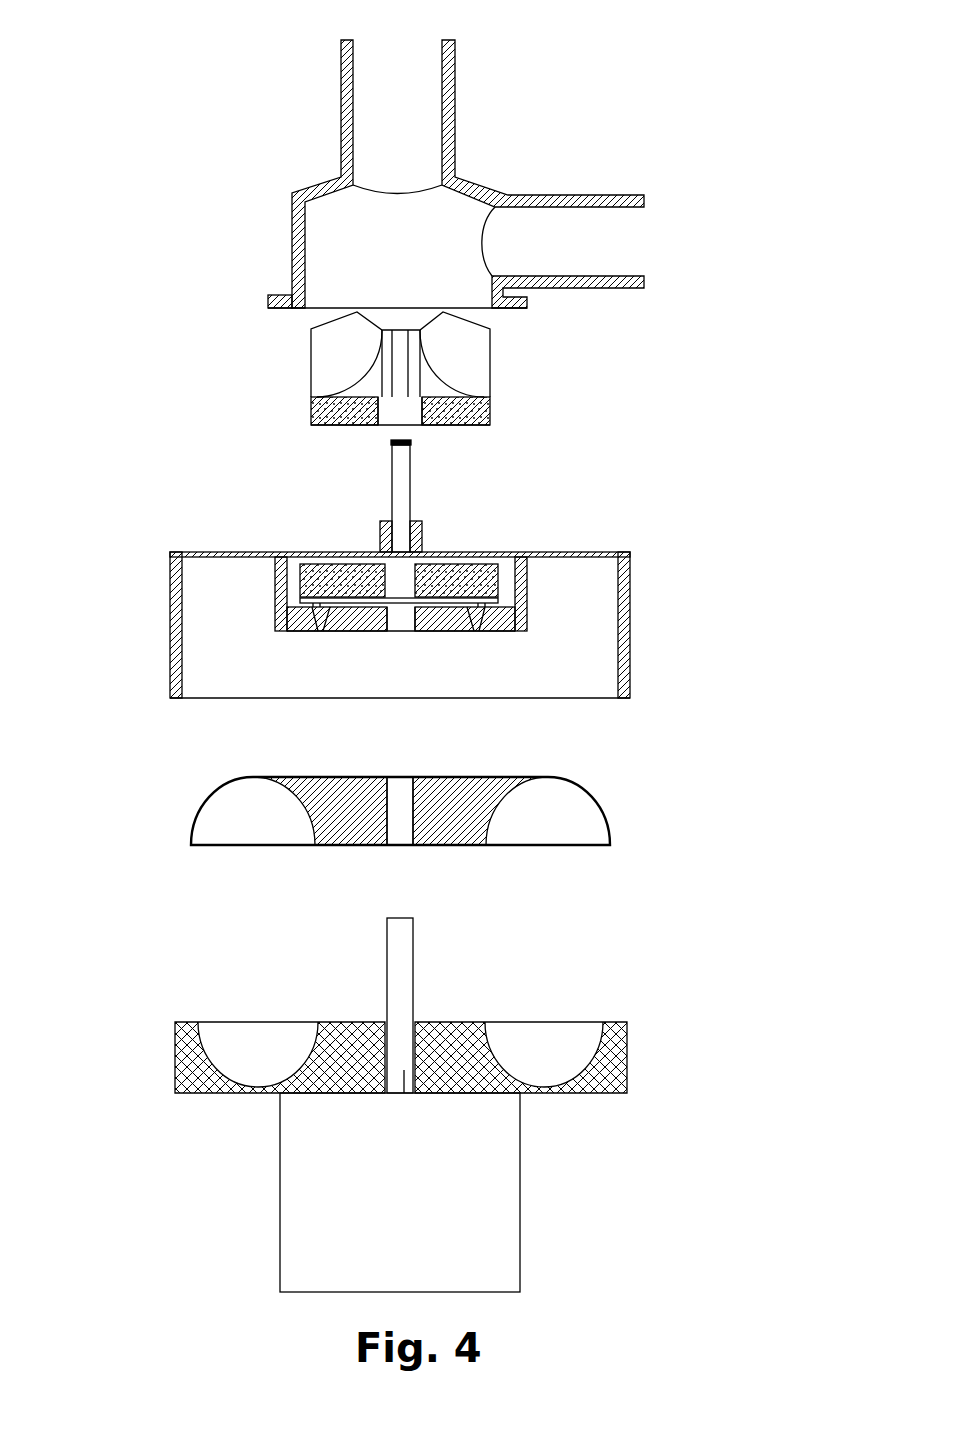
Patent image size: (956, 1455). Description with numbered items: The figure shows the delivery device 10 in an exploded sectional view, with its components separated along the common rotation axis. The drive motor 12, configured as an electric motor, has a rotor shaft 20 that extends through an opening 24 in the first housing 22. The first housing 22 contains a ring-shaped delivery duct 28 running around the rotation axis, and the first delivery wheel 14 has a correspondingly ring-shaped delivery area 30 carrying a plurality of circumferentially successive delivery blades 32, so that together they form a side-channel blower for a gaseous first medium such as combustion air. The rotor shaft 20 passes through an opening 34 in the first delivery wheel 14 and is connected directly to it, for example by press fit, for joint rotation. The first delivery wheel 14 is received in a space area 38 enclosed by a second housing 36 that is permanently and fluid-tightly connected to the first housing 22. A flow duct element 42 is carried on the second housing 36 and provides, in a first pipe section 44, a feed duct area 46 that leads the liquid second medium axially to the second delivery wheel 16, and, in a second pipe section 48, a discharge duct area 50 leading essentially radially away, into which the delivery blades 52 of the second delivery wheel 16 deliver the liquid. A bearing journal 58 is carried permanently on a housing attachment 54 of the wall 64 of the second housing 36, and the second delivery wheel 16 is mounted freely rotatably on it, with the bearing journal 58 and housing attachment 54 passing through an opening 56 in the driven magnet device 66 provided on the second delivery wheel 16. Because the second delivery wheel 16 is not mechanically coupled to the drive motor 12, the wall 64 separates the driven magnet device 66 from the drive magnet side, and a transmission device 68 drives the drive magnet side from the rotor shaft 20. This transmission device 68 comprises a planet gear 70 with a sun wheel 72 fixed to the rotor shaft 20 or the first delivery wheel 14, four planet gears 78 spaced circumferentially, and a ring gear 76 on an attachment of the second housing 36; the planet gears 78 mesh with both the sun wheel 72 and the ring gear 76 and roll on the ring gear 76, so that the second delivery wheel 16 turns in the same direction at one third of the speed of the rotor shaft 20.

The delivery device 10 is at (709, 98).
The drive motor 12 is at (527, 1176).
The first delivery wheel 14 is at (463, 846).
The second delivery wheel 16 is at (399, 408).
The rotor shaft 20 is at (413, 1003).
The first housing 22 is at (175, 1065).
The opening 24 is at (404, 1094).
The delivery duct 28 is at (585, 1050).
The delivery area 30 is at (413, 996).
The delivery blades 32 is at (572, 823).
The opening 34 is at (392, 818).
The second housing 36 is at (170, 622).
The space area 38 is at (588, 620).
The flow duct element 42 is at (501, 174).
The first pipe section 44 is at (458, 87).
The feed duct area 46 is at (378, 85).
The second pipe section 48 is at (630, 194).
The discharge duct area 50 is at (636, 247).
The delivery blades 52 is at (330, 352).
The housing attachment 54 is at (424, 537).
The opening 56 is at (405, 412).
The bearing journal 58 is at (388, 490).
The wall 64 is at (222, 551).
The driven magnet device 66 is at (492, 413).
The transmission device 68 is at (408, 569).
The planet gear 70 is at (509, 627).
The sun wheel 72 is at (433, 620).
The ring gear 76 is at (506, 620).
The planet gears 78 is at (313, 632).